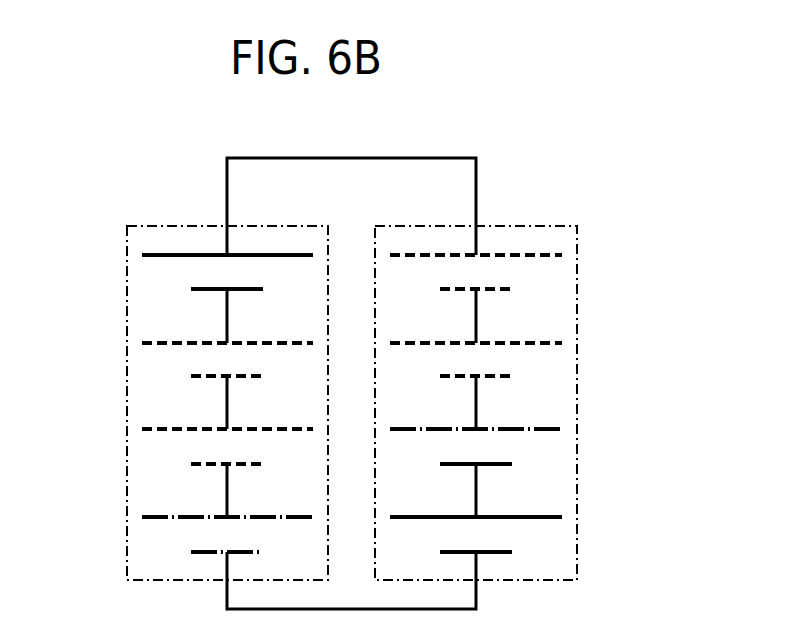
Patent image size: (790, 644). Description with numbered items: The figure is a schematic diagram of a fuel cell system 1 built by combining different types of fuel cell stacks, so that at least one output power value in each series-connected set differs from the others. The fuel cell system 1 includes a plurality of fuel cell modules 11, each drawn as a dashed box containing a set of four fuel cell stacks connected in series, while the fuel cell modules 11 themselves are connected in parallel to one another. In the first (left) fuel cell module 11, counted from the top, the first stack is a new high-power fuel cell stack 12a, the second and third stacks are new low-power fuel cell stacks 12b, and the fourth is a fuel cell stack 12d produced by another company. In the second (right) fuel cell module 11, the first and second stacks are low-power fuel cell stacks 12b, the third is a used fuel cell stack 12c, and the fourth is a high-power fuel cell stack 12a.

The fuel cell system 1 is at (562, 140).
The fuel cell module 11 is at (127, 549).
The high-power fuel cell stack 12a is at (146, 255).
The low-power fuel cell stack 12b is at (146, 343).
The used fuel cell stack 12c is at (560, 429).
The fuel cell stack produced by another company 12d is at (146, 517).